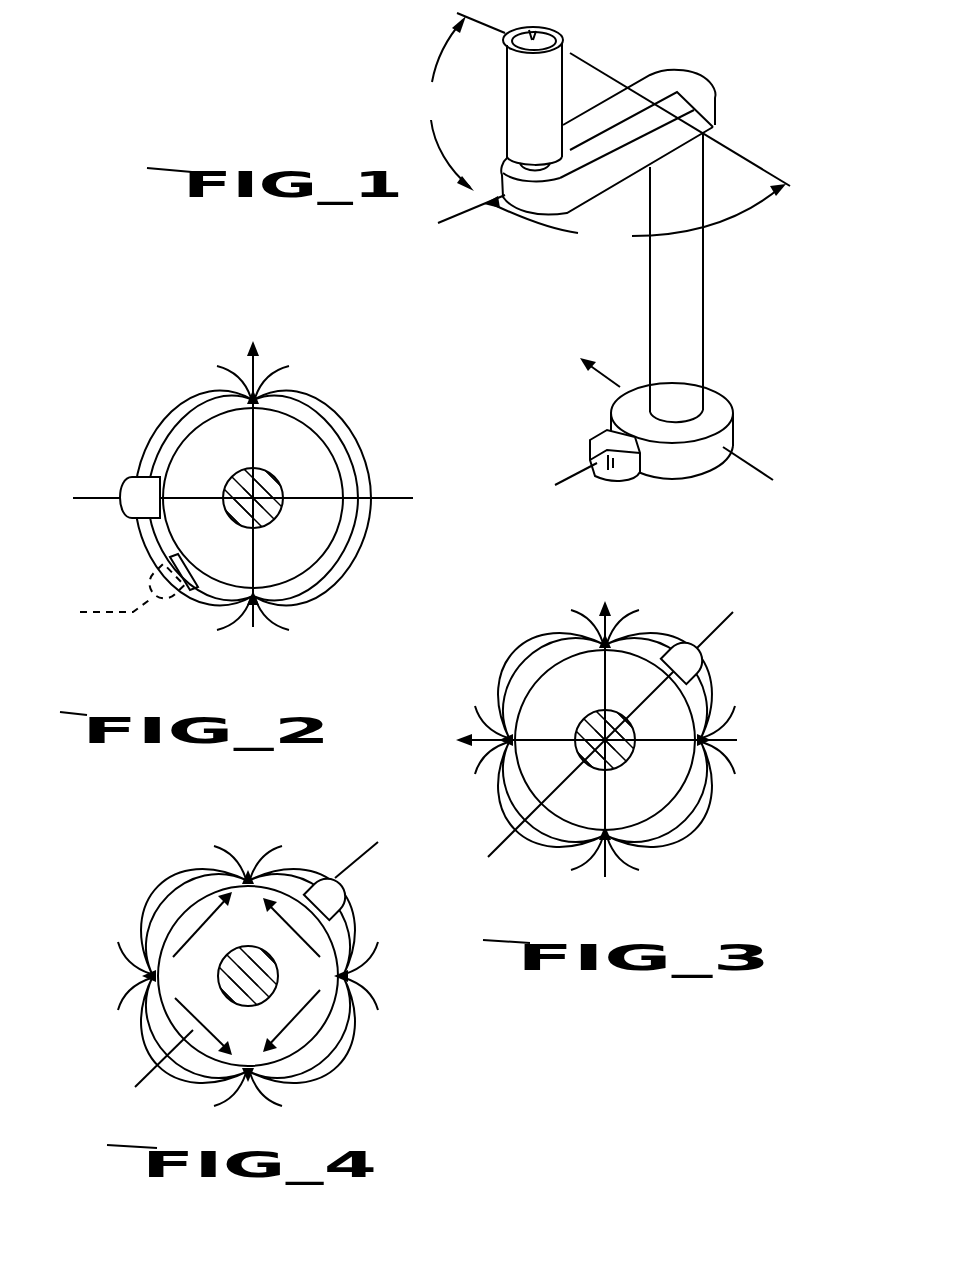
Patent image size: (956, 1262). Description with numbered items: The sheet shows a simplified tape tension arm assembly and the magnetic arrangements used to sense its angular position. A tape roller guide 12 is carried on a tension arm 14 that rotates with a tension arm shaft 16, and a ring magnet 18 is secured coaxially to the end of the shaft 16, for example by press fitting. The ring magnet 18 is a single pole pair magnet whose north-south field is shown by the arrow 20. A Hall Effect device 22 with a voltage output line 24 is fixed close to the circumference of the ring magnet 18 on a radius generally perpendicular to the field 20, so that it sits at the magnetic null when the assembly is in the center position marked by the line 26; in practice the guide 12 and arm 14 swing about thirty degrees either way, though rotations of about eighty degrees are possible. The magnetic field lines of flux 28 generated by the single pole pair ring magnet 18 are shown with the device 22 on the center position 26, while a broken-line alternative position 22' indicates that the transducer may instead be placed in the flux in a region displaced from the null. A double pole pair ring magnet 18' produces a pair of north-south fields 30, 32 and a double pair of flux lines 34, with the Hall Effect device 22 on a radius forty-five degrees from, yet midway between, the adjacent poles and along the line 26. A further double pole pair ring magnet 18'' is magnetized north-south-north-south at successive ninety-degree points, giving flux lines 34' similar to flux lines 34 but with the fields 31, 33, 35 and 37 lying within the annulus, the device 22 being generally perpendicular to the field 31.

In FIG. 1, the tape roller guide 12 is at (505, 68).
In FIG. 1, the tension arm 14 is at (688, 70).
In FIG. 1, the tension arm shaft 16 is at (703, 283).
In FIG. 2, the tension arm shaft 16 is at (273, 492).
In FIG. 3, the tension arm shaft 16 is at (595, 713).
In FIG. 4, the tension arm shaft 16 is at (240, 957).
In FIG. 1, the ring magnet 18 is at (697, 422).
In FIG. 2, the ring magnet 18 is at (283, 492).
In FIG. 3, the double pole pair ring magnet 18' is at (572, 740).
In FIG. 4, the double pole pair ring magnet 18'' is at (299, 976).
In FIG. 1, the magnetic field 20 is at (753, 463).
In FIG. 2, the magnetic field 20 is at (260, 354).
In FIG. 1, the Hall Effect device 22 is at (645, 472).
In FIG. 2, the Hall Effect device 22 is at (116, 516).
In FIG. 3, the Hall Effect device 22 is at (714, 659).
In FIG. 4, the Hall Effect device 22 is at (333, 872).
In FIG. 2, the alternate detent magnet position 22' is at (139, 610).
In FIG. 1, the voltage output line 24 is at (577, 467).
In FIG. 2, the voltage output line 24 is at (97, 495).
In FIG. 3, the voltage output line 24 is at (722, 615).
In FIG. 4, the voltage output line 24 is at (377, 858).
In FIG. 1, the center position line 26 is at (453, 213).
In FIG. 2, the center position line 26 is at (393, 500).
In FIG. 3, the center position line 26 is at (497, 853).
In FIG. 4, the center position line 26 is at (142, 1078).
In FIG. 2, the magnetic field lines of flux 28 is at (203, 610).
In FIG. 3, the N-S magnetic field 30 is at (612, 602).
In FIG. 3, the N-S magnetic field 32 is at (480, 747).
In FIG. 3, the flux lines 34 is at (634, 740).
In FIG. 4, the magnetic flux lines 34' is at (248, 948).
In FIG. 4, the N-S magnetic field 31 is at (327, 930).
In FIG. 4, the N-S magnetic field 33 is at (300, 1013).
In FIG. 4, the N-S magnetic field 35 is at (195, 1015).
In FIG. 4, the N-S magnetic field 37 is at (200, 928).